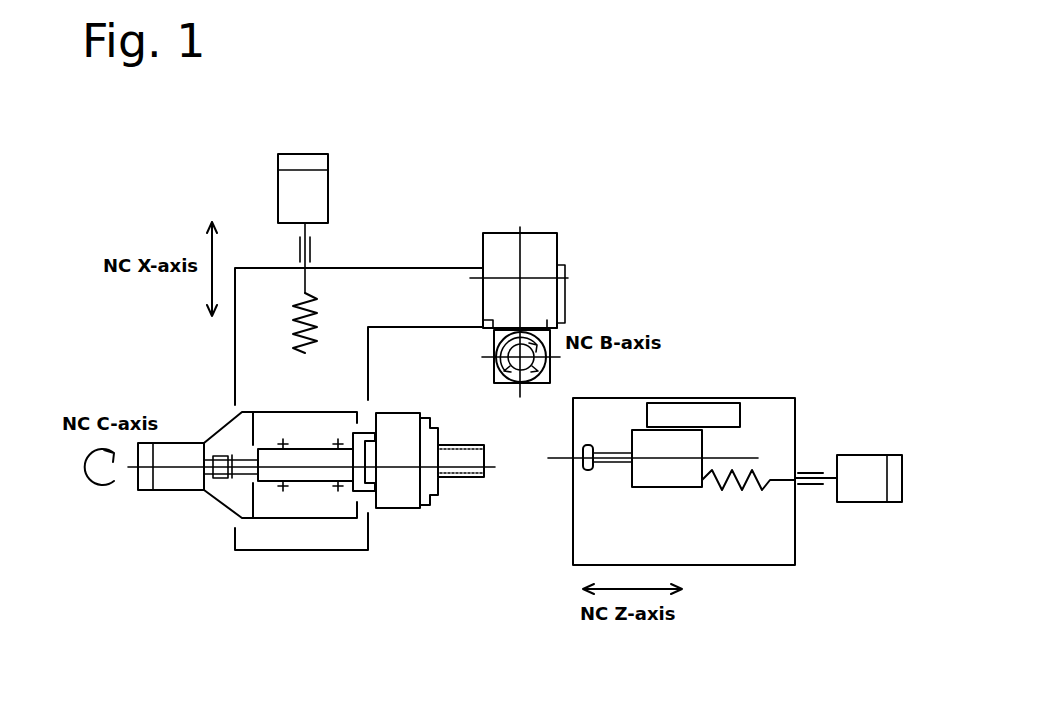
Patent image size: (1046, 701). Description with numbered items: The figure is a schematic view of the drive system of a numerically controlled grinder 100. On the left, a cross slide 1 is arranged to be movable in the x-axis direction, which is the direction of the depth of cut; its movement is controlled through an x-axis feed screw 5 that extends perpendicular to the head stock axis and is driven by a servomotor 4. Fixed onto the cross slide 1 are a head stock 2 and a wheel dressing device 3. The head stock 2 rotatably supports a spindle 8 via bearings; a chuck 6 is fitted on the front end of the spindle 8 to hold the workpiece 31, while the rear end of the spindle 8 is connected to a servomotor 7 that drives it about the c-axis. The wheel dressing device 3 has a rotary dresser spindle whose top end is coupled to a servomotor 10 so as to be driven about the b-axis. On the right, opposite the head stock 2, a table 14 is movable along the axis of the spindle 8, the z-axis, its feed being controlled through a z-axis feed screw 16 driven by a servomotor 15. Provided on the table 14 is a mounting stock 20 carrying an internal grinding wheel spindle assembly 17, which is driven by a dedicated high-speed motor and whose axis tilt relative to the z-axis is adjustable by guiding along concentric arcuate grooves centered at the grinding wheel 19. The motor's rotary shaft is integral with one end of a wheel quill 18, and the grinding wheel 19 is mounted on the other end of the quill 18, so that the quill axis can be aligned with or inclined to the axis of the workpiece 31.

The numerically controlled grinder 100 is at (687, 272).
The cross slide 1 is at (243, 538).
The head stock 2 is at (340, 500).
The wheel dressing device 3 is at (535, 245).
The servomotor 4 is at (313, 185).
The x-axis feed screw 5 is at (310, 271).
The chuck 6 is at (398, 500).
The servomotor 7 is at (177, 452).
The spindle 8 is at (306, 468).
The servomotor 10 is at (568, 302).
The table 14 is at (770, 553).
The servomotor 15 is at (865, 465).
The z-axis feed screw 16 is at (787, 480).
The internal grinding wheel spindle assembly 17 is at (684, 501).
The wheel quill 18 is at (612, 463).
The grinding wheel 19 is at (587, 468).
The mounting stock 20 is at (688, 413).
The workpiece 31 is at (462, 478).